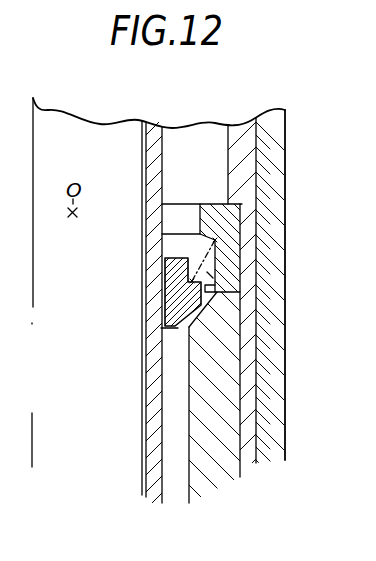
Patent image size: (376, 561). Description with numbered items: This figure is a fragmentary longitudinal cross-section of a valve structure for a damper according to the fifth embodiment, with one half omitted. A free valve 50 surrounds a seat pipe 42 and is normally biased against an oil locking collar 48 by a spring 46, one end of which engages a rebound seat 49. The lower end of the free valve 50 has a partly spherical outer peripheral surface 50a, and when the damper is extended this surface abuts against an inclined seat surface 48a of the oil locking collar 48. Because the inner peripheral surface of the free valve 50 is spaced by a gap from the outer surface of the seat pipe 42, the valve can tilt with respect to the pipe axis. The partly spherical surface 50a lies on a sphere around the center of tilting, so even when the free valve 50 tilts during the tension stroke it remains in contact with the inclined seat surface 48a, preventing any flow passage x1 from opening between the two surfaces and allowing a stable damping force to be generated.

The seat pipe 42 is at (157, 405).
The spring 46 is at (215, 240).
The oil locking collar 48 is at (225, 407).
The inclined seat surface 48a is at (210, 298).
The rebound seat 49 is at (232, 257).
The free valve 50 is at (197, 319).
The partly spherical outer peripheral surface 50a is at (178, 329).
The flow passage x1 is at (211, 277).